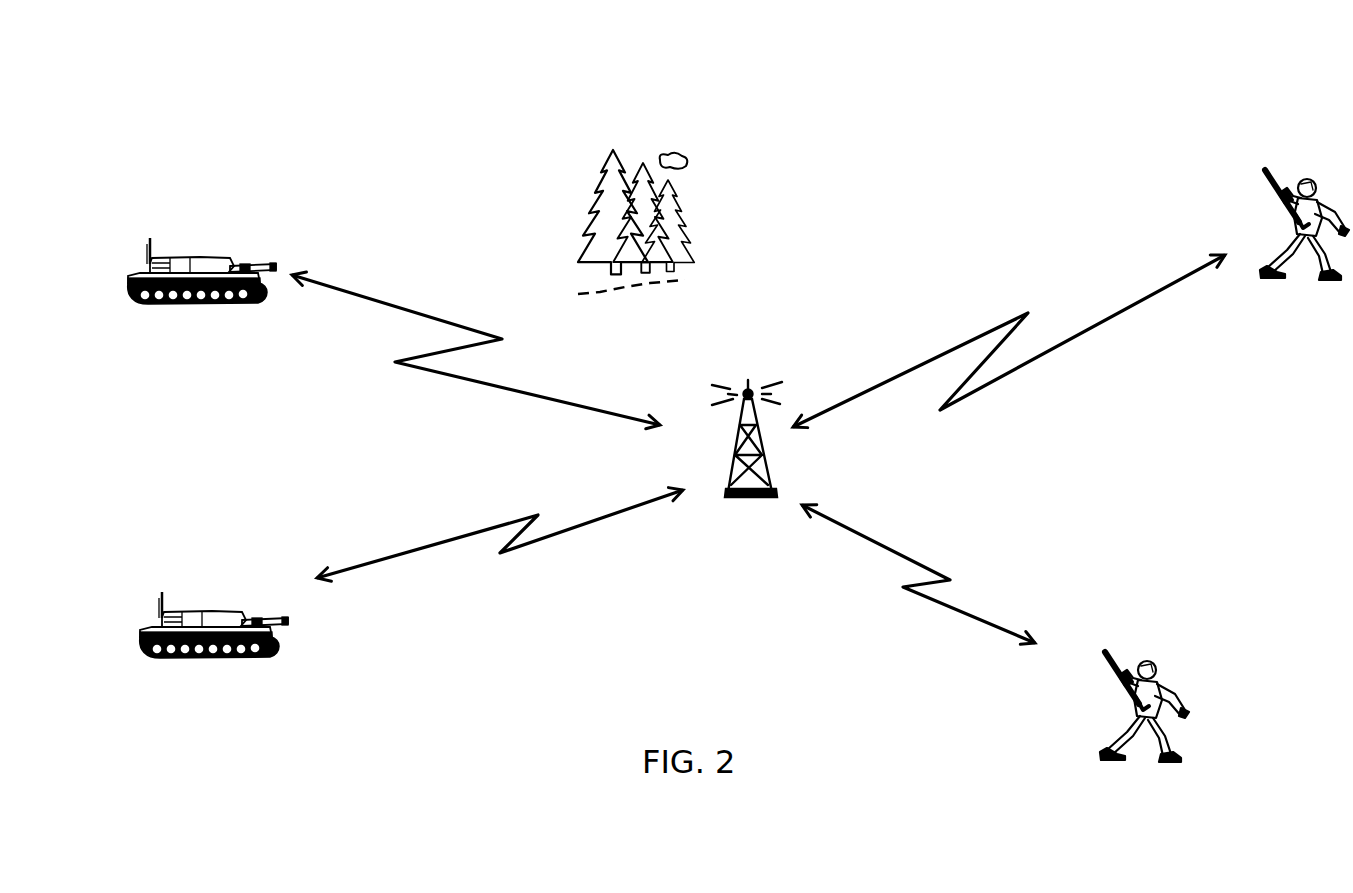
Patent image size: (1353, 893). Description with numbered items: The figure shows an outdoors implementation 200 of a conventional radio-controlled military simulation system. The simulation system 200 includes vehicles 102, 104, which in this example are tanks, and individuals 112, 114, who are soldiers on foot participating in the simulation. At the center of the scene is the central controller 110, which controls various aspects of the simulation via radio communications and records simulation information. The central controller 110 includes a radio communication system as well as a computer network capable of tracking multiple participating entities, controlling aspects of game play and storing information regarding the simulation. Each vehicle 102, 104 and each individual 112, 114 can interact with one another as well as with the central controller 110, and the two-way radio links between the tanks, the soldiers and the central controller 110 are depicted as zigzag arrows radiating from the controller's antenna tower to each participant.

The outdoors implementation of the radio-controlled military simulation system 200 is at (676, 55).
The vehicle 102 is at (124, 265).
The vehicle 104 is at (140, 606).
The central controller 110 is at (712, 388).
The individual 112 is at (1247, 186).
The individual 114 is at (1085, 730).